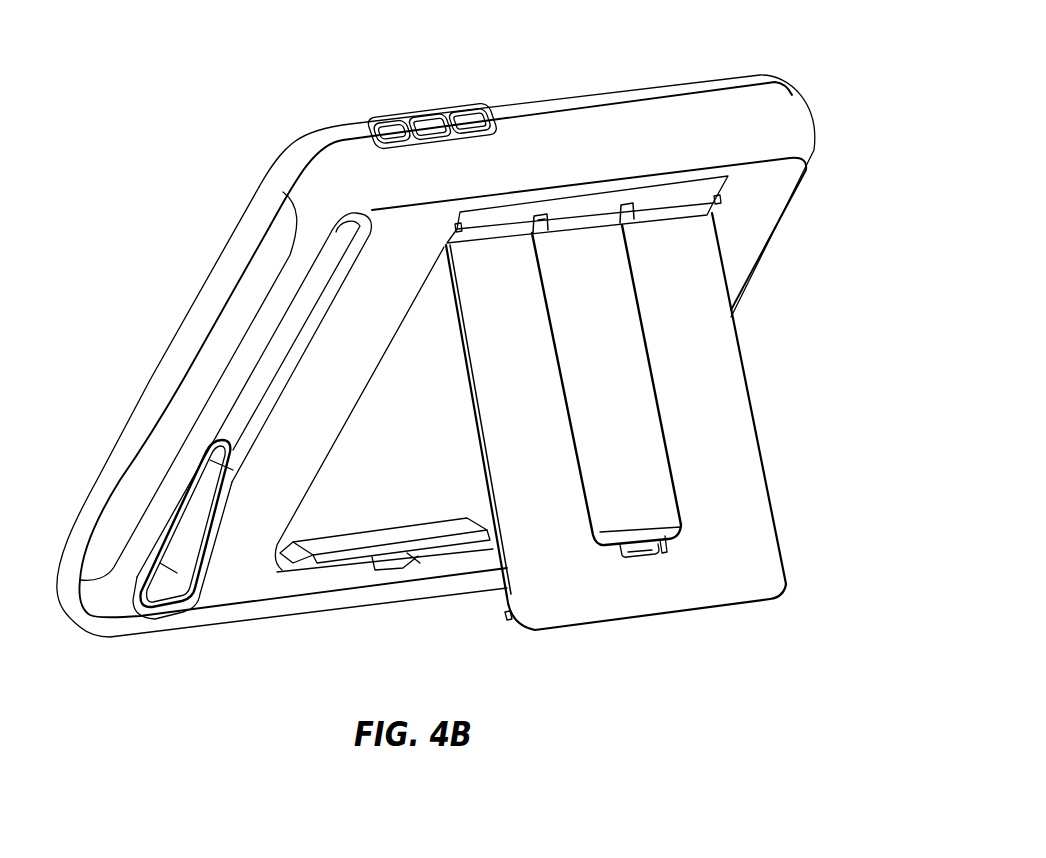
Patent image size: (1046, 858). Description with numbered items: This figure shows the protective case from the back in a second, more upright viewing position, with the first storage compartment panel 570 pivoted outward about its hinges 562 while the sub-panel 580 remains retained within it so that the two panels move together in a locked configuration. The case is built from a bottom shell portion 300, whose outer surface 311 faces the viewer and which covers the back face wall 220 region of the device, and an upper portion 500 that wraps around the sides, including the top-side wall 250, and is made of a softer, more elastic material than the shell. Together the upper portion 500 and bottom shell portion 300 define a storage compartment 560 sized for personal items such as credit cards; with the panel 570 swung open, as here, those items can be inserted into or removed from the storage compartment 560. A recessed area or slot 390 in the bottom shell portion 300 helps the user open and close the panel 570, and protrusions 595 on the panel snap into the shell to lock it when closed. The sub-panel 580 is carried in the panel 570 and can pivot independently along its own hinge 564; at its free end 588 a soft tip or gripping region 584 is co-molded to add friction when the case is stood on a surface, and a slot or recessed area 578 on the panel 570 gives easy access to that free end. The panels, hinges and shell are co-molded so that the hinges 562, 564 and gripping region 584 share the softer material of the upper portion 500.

The bottom shell portion 300 is at (793, 117).
The outer surface 311 is at (757, 192).
The upper portion 500 is at (193, 337).
The top-side wall 250 is at (163, 413).
The back face wall 220 is at (212, 578).
The storage compartment 560 is at (332, 500).
The recessed area or slot 390 is at (393, 572).
The first storage compartment panel 570 is at (707, 362).
The hinges 562 is at (500, 220).
The hinge 564 is at (600, 195).
The sub-panel 580 is at (633, 432).
The free end 588 is at (657, 523).
The soft tip or gripping region 584 is at (660, 530).
The slot or recessed area 578 is at (644, 556).
The protrusions 595 is at (507, 618).